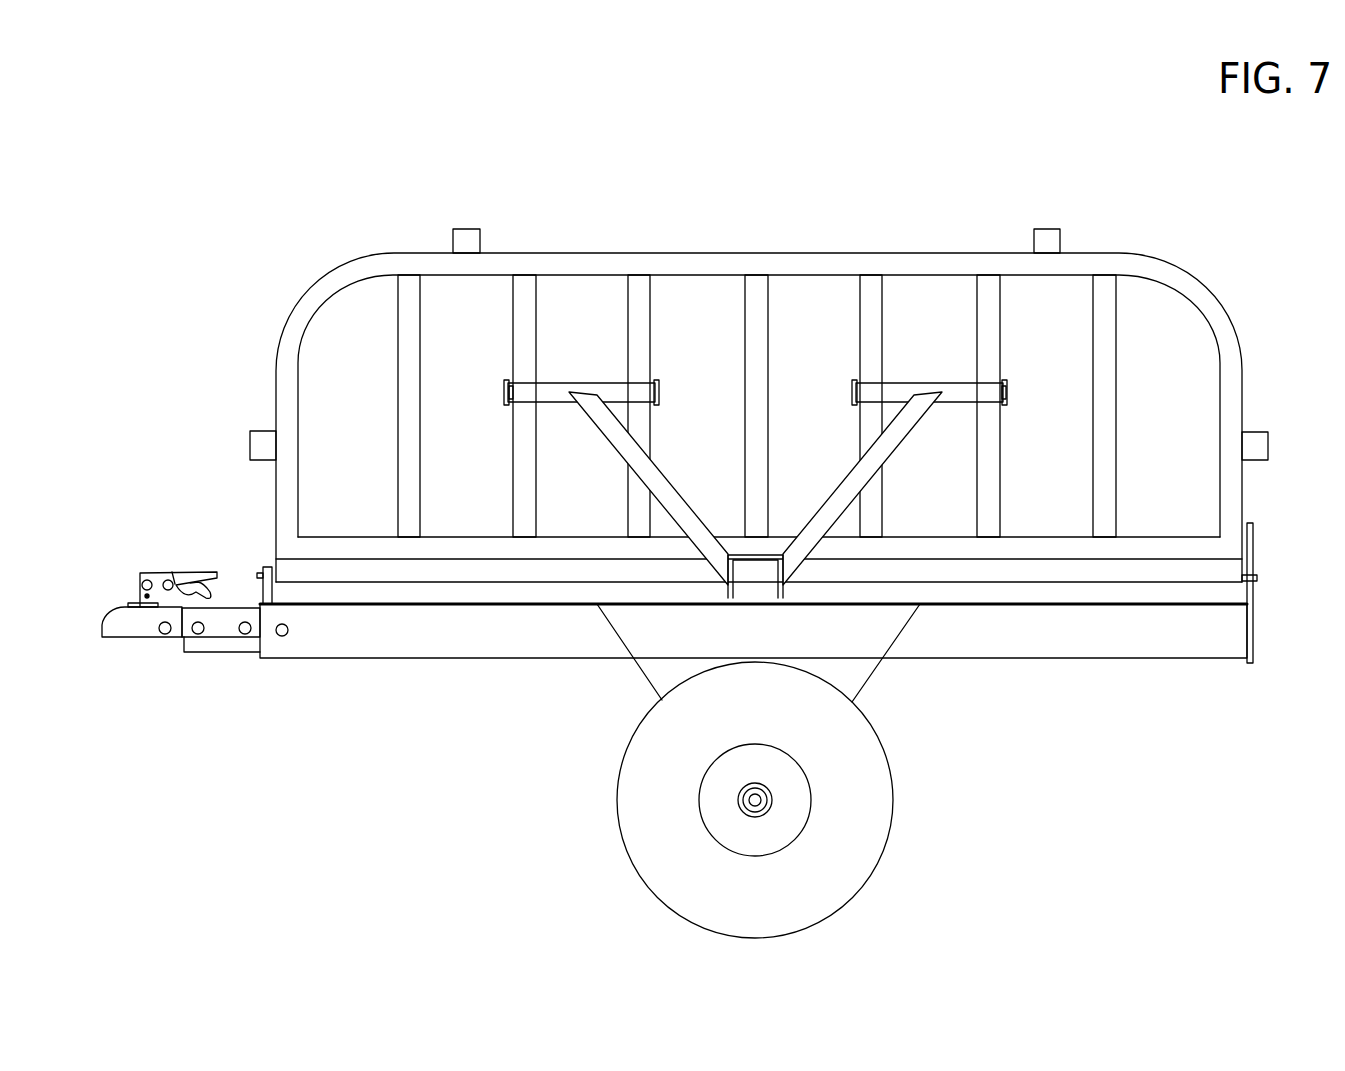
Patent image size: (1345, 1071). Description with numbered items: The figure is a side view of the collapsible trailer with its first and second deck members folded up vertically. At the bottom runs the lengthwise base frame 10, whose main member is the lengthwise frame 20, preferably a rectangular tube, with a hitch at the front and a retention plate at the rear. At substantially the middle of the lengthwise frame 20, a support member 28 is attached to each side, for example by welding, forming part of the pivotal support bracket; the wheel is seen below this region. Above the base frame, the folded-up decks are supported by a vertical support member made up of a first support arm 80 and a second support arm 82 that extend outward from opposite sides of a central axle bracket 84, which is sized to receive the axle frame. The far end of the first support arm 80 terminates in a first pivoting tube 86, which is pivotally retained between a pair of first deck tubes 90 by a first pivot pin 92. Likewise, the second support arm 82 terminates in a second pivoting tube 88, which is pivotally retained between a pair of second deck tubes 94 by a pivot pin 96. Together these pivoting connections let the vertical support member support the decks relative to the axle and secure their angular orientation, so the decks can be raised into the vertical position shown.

The lengthwise base frame 10 is at (685, 583).
The lengthwise frame 20 is at (402, 635).
The support member 28 is at (662, 652).
The first support arm 80 is at (663, 492).
The second support arm 82 is at (847, 492).
The axle bracket 84 is at (790, 599).
The first pivoting tube 86 is at (558, 383).
The second pivoting tube 88 is at (958, 383).
The first deck tubes 90 is at (650, 388).
The first pivot pin 92 is at (503, 392).
The second deck tubes 94 is at (872, 383).
The pivot pin 96 is at (1004, 393).